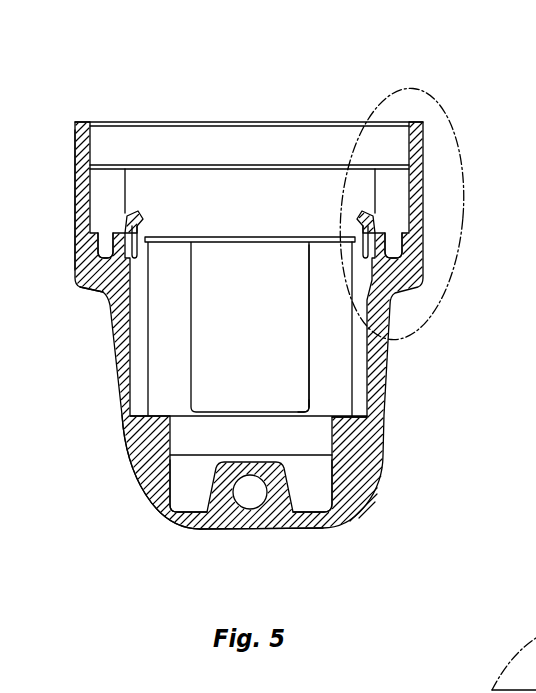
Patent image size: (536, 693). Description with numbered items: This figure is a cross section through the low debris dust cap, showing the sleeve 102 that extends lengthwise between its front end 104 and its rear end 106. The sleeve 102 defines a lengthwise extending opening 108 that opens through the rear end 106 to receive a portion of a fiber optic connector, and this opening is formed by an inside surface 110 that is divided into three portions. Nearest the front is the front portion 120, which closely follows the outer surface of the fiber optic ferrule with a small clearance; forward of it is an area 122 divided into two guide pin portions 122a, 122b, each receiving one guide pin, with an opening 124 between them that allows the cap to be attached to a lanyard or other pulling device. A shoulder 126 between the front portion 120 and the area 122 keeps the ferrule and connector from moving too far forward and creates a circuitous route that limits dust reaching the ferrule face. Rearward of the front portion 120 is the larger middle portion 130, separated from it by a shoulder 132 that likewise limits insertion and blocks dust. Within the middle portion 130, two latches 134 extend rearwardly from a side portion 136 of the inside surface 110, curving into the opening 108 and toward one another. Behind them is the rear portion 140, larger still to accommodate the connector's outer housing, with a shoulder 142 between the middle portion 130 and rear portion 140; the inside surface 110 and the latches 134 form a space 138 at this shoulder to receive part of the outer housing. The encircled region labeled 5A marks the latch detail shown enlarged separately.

The sleeve 102 is at (377, 463).
The front end 104 is at (378, 523).
The rear end 106 is at (284, 140).
The lengthwise extending opening 108 is at (263, 326).
The inside surface 110 is at (372, 354).
The front portion 120 is at (352, 438).
The area 122 is at (160, 470).
The guide pin portion 122a is at (182, 483).
The guide pin portion 122b is at (318, 490).
The opening 124 is at (249, 501).
The shoulder 126 is at (315, 488).
The middle portion 130 is at (340, 372).
The shoulder 132 is at (336, 416).
The latches 134 is at (138, 213).
The side portion 136 is at (75, 190).
The space 138 is at (103, 217).
The rear portion 140 is at (258, 210).
The shoulder 142 is at (83, 270).
The detail view region 5A is at (456, 173).